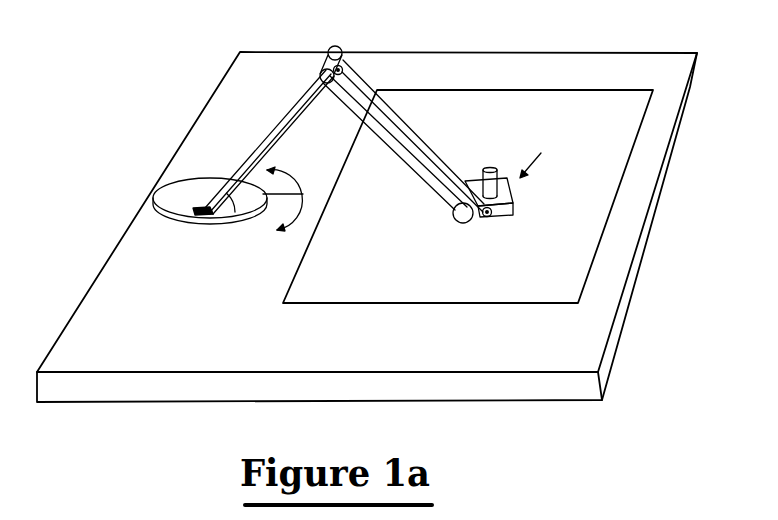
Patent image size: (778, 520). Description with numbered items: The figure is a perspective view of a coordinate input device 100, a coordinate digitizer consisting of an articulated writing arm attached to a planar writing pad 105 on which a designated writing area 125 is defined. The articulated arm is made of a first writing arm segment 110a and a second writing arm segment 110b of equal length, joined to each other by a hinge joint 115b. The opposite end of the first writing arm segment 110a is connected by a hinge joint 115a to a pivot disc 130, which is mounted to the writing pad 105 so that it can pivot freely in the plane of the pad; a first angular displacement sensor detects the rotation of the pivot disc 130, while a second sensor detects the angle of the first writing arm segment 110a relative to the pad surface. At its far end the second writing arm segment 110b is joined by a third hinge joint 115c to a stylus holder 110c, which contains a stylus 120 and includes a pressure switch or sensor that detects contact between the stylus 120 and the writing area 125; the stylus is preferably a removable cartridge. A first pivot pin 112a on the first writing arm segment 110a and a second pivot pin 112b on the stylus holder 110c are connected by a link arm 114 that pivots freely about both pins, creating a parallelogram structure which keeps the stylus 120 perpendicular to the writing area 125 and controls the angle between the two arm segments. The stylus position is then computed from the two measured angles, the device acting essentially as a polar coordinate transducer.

The coordinate input device 100 is at (207, 37).
The writing pad 105 is at (378, 52).
The first writing arm segment 110a is at (288, 100).
The second writing arm segment 110b is at (402, 117).
The stylus holder 110c is at (517, 201).
The first pivot pin 112a is at (343, 70).
The second pivot pin 112b is at (489, 217).
The link arm 114 is at (420, 164).
The hinge joint 115a is at (214, 173).
The hinge joint 115b is at (328, 47).
The third hinge joint 115c is at (453, 221).
The stylus 120 is at (484, 167).
The writing area 125 is at (482, 304).
The pivot disc 130 is at (208, 223).